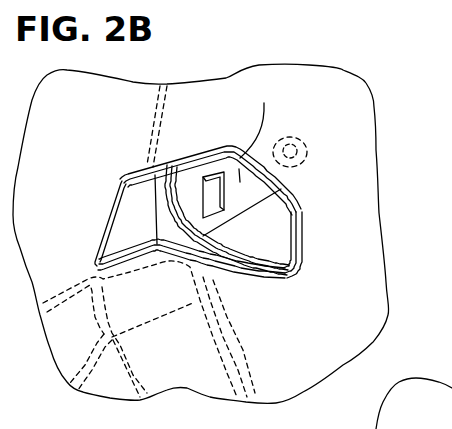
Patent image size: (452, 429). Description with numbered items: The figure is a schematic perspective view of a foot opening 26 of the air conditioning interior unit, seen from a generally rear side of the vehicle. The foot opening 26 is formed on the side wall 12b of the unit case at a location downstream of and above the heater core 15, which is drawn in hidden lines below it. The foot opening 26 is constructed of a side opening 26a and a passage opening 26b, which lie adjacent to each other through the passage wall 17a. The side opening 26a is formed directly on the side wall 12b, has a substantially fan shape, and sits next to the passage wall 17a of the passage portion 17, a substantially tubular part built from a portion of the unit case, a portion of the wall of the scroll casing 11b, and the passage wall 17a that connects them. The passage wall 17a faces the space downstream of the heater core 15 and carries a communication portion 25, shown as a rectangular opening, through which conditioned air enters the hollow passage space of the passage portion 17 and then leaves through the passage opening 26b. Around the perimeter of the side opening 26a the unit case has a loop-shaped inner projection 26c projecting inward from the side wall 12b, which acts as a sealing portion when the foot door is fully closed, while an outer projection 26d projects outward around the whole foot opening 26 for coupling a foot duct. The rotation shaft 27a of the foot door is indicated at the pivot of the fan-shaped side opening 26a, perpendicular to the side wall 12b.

The scroll casing 11b is at (157, 111).
The side wall 12b is at (348, 150).
The heater core 15 is at (203, 376).
The passage portion 17 is at (127, 237).
The passage wall 17a is at (259, 132).
The communication portion 25 is at (212, 182).
The foot opening 26 is at (123, 171).
The side opening 26a is at (291, 204).
The passage opening 26b is at (114, 200).
The inner projection 26c is at (237, 267).
The outer projection 26d is at (229, 271).
The rotation shaft 27a is at (289, 136).